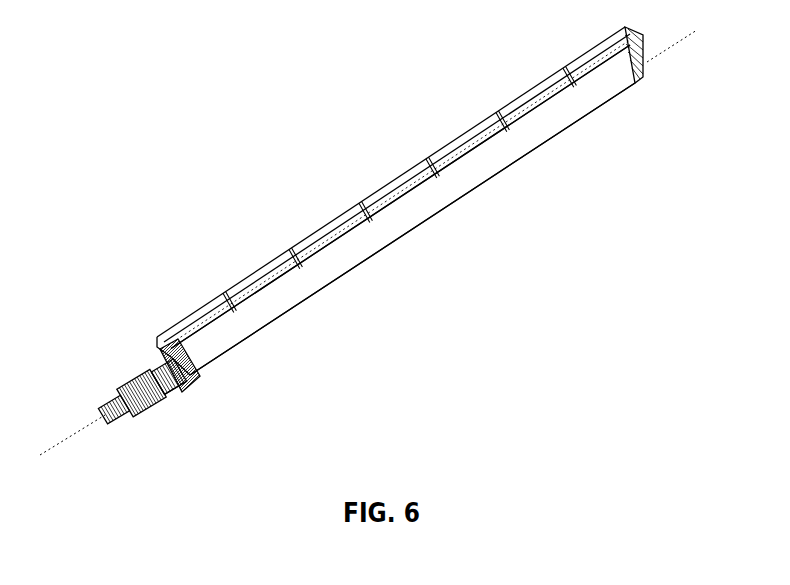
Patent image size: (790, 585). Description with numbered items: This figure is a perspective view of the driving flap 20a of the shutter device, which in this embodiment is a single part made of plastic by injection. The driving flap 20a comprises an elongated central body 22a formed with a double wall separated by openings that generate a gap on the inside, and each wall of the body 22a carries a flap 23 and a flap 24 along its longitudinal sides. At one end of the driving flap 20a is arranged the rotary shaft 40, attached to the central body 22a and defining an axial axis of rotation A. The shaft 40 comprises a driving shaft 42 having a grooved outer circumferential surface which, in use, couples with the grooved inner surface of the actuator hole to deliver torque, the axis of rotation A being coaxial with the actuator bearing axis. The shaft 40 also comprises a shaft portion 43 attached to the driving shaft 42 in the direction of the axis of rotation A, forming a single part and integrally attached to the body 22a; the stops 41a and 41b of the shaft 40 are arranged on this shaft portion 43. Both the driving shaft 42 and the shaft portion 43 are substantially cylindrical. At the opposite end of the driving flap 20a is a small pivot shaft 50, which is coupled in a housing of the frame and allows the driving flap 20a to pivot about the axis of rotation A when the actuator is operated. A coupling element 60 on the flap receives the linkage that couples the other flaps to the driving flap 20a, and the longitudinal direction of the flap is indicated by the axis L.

The driving flap 20a is at (150, 188).
The elongated central body 22a is at (478, 170).
The flap 23 is at (527, 120).
The flap 24 is at (580, 117).
The pivot shaft 50 is at (645, 65).
The rotary shaft 40 is at (80, 318).
The stop 41a is at (130, 372).
The stop 41b is at (172, 392).
The driving shaft 42 is at (121, 428).
The shaft portion 43 is at (145, 375).
The coupling element 60 is at (197, 369).
The longitudinal axis L is at (682, 31).
The axis of rotation A is at (63, 447).